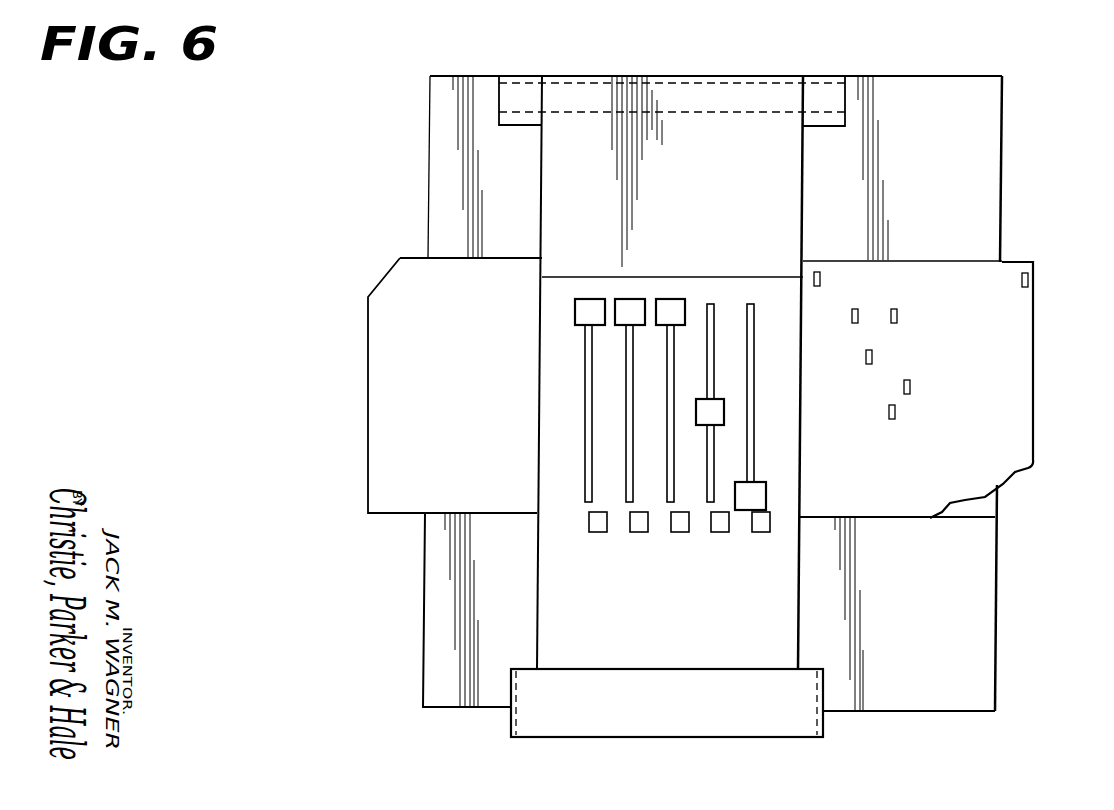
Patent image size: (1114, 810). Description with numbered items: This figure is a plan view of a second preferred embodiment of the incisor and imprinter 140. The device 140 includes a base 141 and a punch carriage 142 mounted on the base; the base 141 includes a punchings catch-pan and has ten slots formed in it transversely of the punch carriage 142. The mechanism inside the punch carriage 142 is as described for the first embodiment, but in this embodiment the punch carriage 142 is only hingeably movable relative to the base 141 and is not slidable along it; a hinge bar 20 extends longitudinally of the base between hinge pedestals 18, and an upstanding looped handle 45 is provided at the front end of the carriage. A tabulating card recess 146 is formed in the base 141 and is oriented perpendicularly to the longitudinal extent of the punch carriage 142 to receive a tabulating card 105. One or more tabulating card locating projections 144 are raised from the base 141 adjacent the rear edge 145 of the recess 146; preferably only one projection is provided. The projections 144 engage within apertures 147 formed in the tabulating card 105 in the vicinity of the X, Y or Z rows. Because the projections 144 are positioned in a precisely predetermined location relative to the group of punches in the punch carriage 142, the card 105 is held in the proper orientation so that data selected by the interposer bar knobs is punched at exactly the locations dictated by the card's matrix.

The hinge bar 20 is at (750, 83).
The incisor and imprinter 140 is at (415, 202).
The punch carriage 142 is at (765, 206).
The base 141 is at (977, 207).
The tabulating card recess 146 is at (975, 511).
The tabulating card 105 is at (997, 372).
The rear edge 145 is at (922, 270).
The tabulating card locating projections 144 is at (820, 286).
The apertures 147 is at (1030, 264).
The hinge pedestal 18 is at (712, 398).
The handle 45 is at (825, 730).